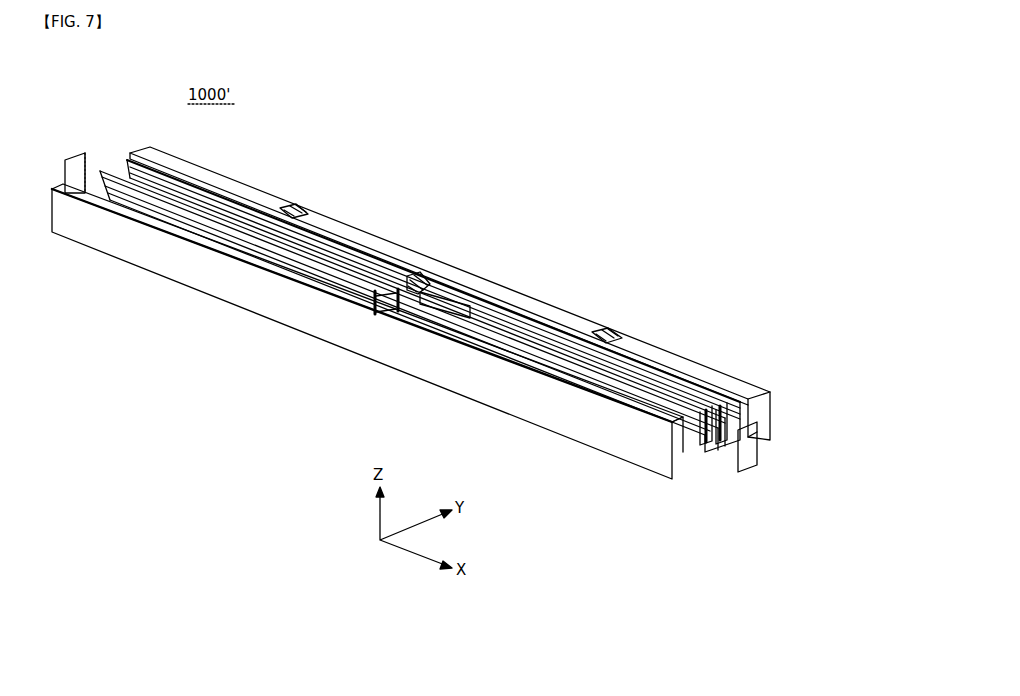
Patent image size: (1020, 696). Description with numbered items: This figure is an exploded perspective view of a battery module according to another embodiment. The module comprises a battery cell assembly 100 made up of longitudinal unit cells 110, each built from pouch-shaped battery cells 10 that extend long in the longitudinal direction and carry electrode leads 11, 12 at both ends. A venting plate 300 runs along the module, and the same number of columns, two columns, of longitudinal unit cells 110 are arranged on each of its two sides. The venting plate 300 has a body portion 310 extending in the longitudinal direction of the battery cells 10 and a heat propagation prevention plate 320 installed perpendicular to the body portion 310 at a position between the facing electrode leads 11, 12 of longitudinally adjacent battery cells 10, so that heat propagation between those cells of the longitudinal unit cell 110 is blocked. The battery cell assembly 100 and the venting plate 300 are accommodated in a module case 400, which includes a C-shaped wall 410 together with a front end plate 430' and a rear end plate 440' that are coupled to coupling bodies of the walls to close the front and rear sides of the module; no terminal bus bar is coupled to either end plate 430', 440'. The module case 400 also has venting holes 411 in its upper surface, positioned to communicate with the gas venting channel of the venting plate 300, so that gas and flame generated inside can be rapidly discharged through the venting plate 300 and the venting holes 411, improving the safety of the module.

The module case 400 is at (396, 241).
The C-shaped wall 410 is at (177, 259).
The venting hole 411 is at (296, 207).
The rear end plate 440' is at (71, 156).
The front end plate 430' is at (784, 447).
The venting plate 300 is at (550, 304).
The body portion 310 is at (476, 306).
The heat propagation prevention plate 320 is at (434, 284).
The battery cell assembly 100 is at (420, 306).
The longitudinal unit cell 110 is at (330, 390).
The battery cell 10 is at (330, 296).
The electrode lead 11 is at (728, 458).
The electrode lead 12 is at (701, 452).